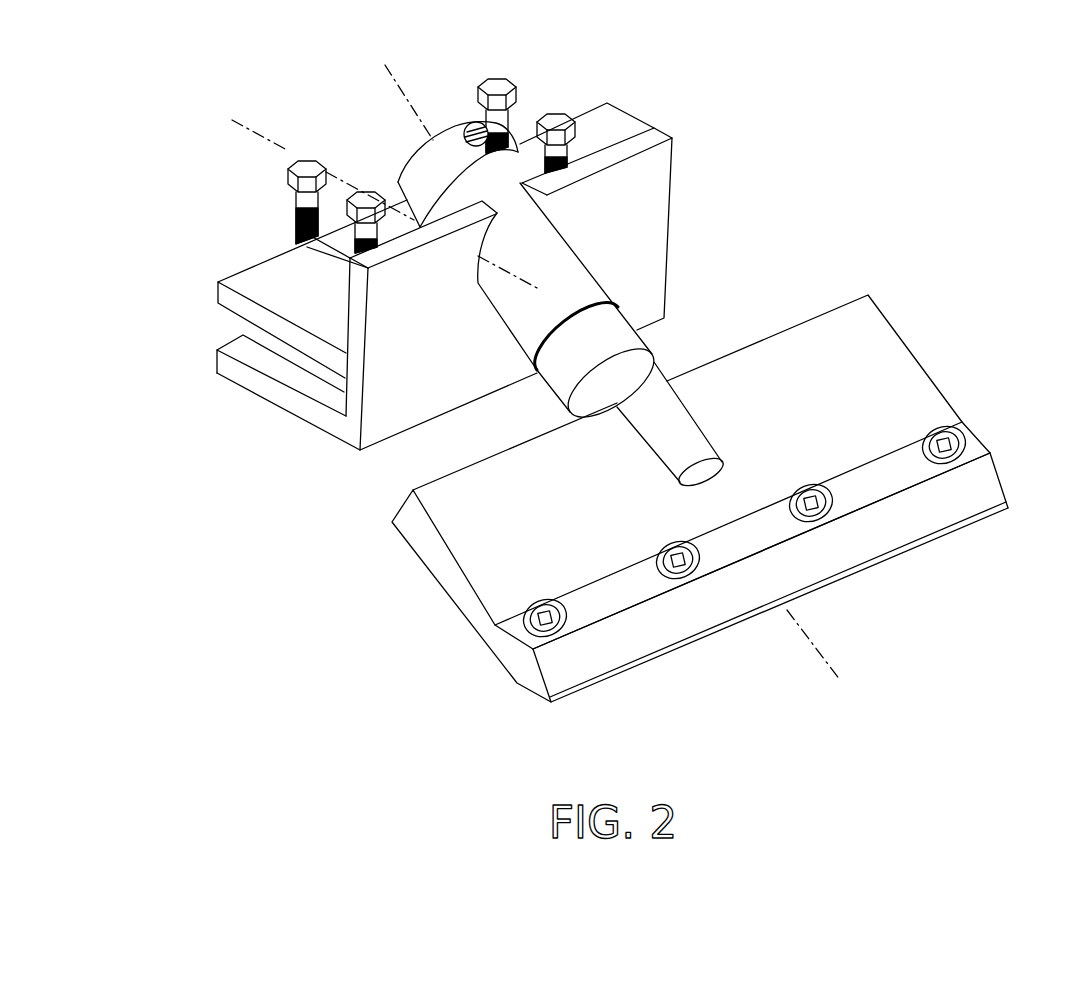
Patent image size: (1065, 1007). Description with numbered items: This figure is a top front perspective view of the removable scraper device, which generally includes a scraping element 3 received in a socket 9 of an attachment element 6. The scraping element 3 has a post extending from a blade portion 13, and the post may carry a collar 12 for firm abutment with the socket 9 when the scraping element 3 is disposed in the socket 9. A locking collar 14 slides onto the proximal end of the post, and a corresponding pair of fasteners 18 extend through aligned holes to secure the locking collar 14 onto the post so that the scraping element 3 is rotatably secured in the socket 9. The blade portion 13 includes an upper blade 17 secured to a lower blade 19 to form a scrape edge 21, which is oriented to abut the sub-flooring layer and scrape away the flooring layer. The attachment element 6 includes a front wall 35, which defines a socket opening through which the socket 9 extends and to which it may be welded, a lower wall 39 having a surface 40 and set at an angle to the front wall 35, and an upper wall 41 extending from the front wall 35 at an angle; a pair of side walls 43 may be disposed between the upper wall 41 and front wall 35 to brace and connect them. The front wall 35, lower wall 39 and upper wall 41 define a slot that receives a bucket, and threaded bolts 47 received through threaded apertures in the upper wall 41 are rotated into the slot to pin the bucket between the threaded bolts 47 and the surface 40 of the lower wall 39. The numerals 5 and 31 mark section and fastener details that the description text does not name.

The scraping element 3 is at (589, 390).
The section line 5- 5 is at (385, 65).
The attachment element 6 is at (232, 120).
The socket 9 is at (603, 285).
The collar 12 is at (618, 335).
The blade portion 13 is at (930, 370).
The locking collar 14 is at (423, 172).
The upper blade 17 is at (900, 472).
The fasteners 18 is at (460, 128).
The lower blade 19 is at (480, 555).
The scrape edge 21 is at (553, 710).
The screws 31 is at (965, 440).
The front wall 35 is at (398, 347).
The lower wall 39 is at (247, 378).
The surface 40 is at (293, 375).
The upper wall 41 is at (233, 300).
The side walls 43 is at (283, 272).
The threaded bolts 47 is at (367, 200).